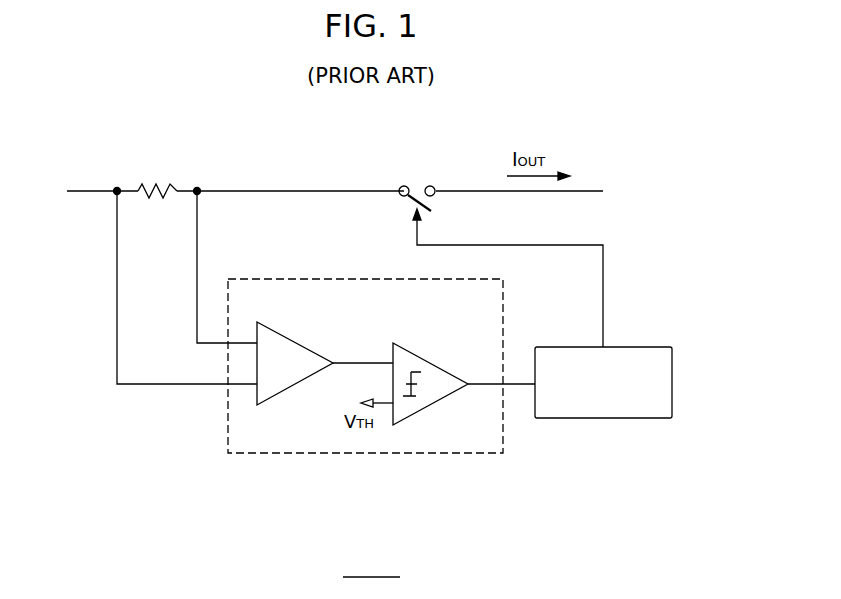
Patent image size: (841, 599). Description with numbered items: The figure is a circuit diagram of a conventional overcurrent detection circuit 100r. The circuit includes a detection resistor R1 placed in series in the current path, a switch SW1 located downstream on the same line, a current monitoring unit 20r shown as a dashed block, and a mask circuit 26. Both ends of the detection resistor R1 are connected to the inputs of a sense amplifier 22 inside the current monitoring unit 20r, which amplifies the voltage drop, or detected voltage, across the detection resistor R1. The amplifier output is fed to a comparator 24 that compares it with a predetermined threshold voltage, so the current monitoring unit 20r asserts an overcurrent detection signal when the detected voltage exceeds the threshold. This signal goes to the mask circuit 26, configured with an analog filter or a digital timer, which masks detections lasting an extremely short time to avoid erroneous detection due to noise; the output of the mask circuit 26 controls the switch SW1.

The detection resistor R1 is at (161, 184).
The switch SW1 is at (418, 185).
The current monitoring unit 20r is at (389, 454).
The sense amplifier 22 is at (289, 338).
The comparator 24 is at (434, 360).
The mask circuit 26 is at (620, 420).
The overcurrent detection circuit 100r is at (371, 564).